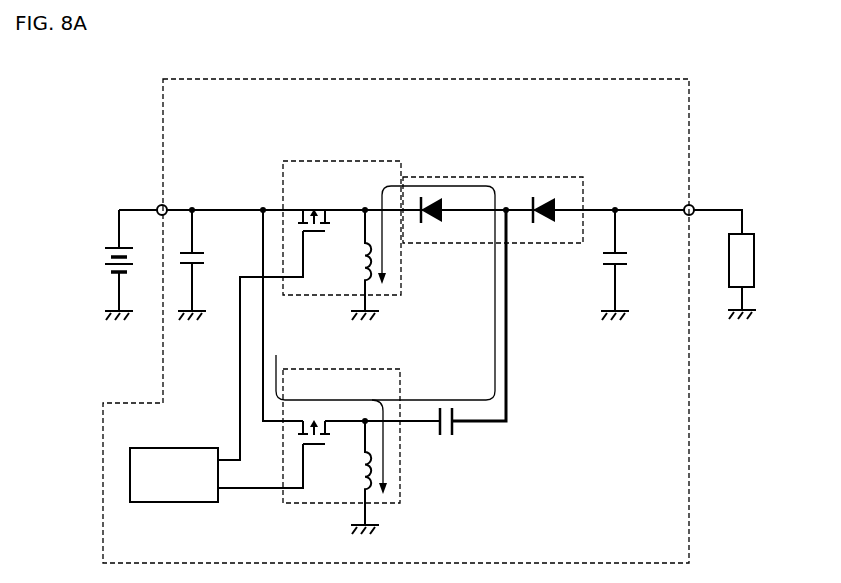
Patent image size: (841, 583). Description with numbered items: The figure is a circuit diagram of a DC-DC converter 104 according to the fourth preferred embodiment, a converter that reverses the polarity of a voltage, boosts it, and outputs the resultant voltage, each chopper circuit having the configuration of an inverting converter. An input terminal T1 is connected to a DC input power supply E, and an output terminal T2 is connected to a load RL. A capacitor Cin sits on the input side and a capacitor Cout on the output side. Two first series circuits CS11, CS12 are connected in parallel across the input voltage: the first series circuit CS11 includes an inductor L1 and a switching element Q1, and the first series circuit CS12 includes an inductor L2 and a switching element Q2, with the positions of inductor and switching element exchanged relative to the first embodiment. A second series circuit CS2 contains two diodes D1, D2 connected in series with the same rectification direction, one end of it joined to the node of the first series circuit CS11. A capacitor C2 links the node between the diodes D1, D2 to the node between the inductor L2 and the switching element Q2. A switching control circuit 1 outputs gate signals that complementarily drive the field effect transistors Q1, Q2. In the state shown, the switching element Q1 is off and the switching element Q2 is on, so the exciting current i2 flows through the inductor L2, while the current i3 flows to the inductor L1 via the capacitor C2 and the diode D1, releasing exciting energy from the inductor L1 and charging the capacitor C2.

The DC-DC converter 104 is at (690, 78).
The switching control circuit 1 is at (185, 448).
The input terminal T1 is at (150, 201).
The output terminal T2 is at (701, 200).
The DC input power supply E is at (108, 265).
The capacitor Cin is at (206, 265).
The capacitor Cout is at (634, 265).
The first series circuit CS11 is at (362, 160).
The first series circuit CS12 is at (378, 369).
The second series circuit CS2 is at (583, 177).
The switching element Q1 is at (274, 325).
The switching element Q2 is at (274, 444).
The inductor L1 is at (359, 265).
The inductor L2 is at (359, 477).
The diode D1 is at (432, 197).
The diode D2 is at (544, 197).
The capacitor C2 is at (446, 405).
The load RL is at (756, 261).
The exciting current i2 is at (369, 438).
The current i3 is at (385, 293).